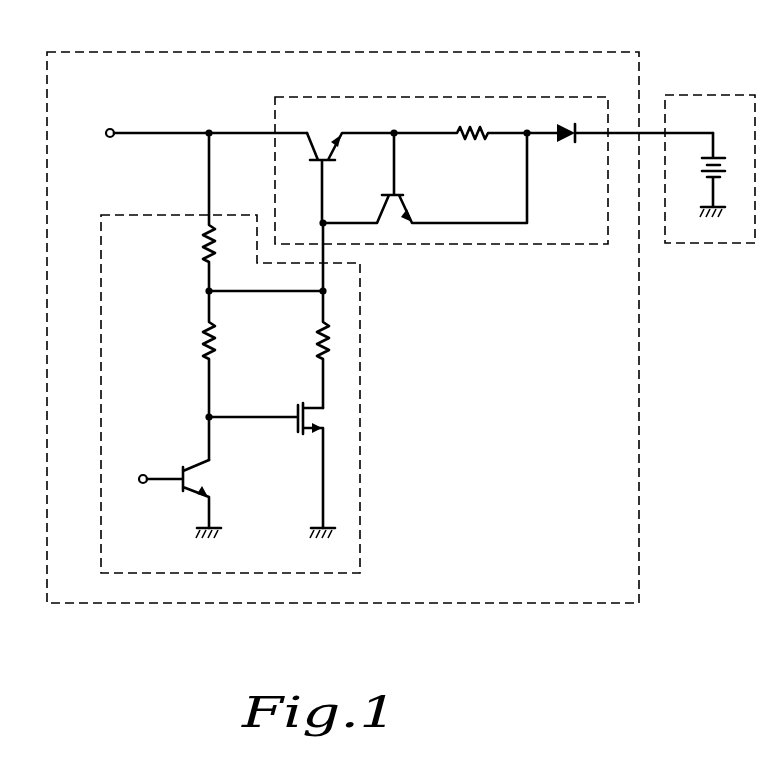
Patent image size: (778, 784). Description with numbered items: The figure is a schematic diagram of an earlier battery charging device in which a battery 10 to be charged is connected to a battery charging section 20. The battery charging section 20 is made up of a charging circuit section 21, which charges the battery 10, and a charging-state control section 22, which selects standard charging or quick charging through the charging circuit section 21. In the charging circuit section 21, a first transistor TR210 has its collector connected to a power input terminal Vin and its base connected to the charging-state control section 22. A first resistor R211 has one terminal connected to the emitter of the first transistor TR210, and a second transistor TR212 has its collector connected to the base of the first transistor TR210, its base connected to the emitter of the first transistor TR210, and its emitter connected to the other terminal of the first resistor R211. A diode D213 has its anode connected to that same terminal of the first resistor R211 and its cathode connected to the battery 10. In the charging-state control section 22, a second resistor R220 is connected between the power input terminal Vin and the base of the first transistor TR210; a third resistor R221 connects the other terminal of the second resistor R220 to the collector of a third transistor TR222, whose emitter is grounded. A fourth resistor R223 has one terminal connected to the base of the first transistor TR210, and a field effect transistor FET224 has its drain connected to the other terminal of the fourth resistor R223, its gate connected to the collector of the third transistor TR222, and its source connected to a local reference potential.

The battery 10 is at (700, 95).
The battery charging section 20 is at (333, 52).
The charging circuit section 21 is at (427, 97).
The charging-state control section 22 is at (112, 215).
The power input terminal Vin is at (182, 135).
The first transistor TR210 is at (343, 165).
The first resistor R211 is at (460, 123).
The second transistor TR212 is at (423, 180).
The diode D213 is at (620, 144).
The second resistor R220 is at (181, 212).
The third resistor R221 is at (183, 375).
The fourth resistor R223 is at (267, 315).
The field effect transistor FET224 is at (272, 460).
The third transistor TR222 is at (204, 499).